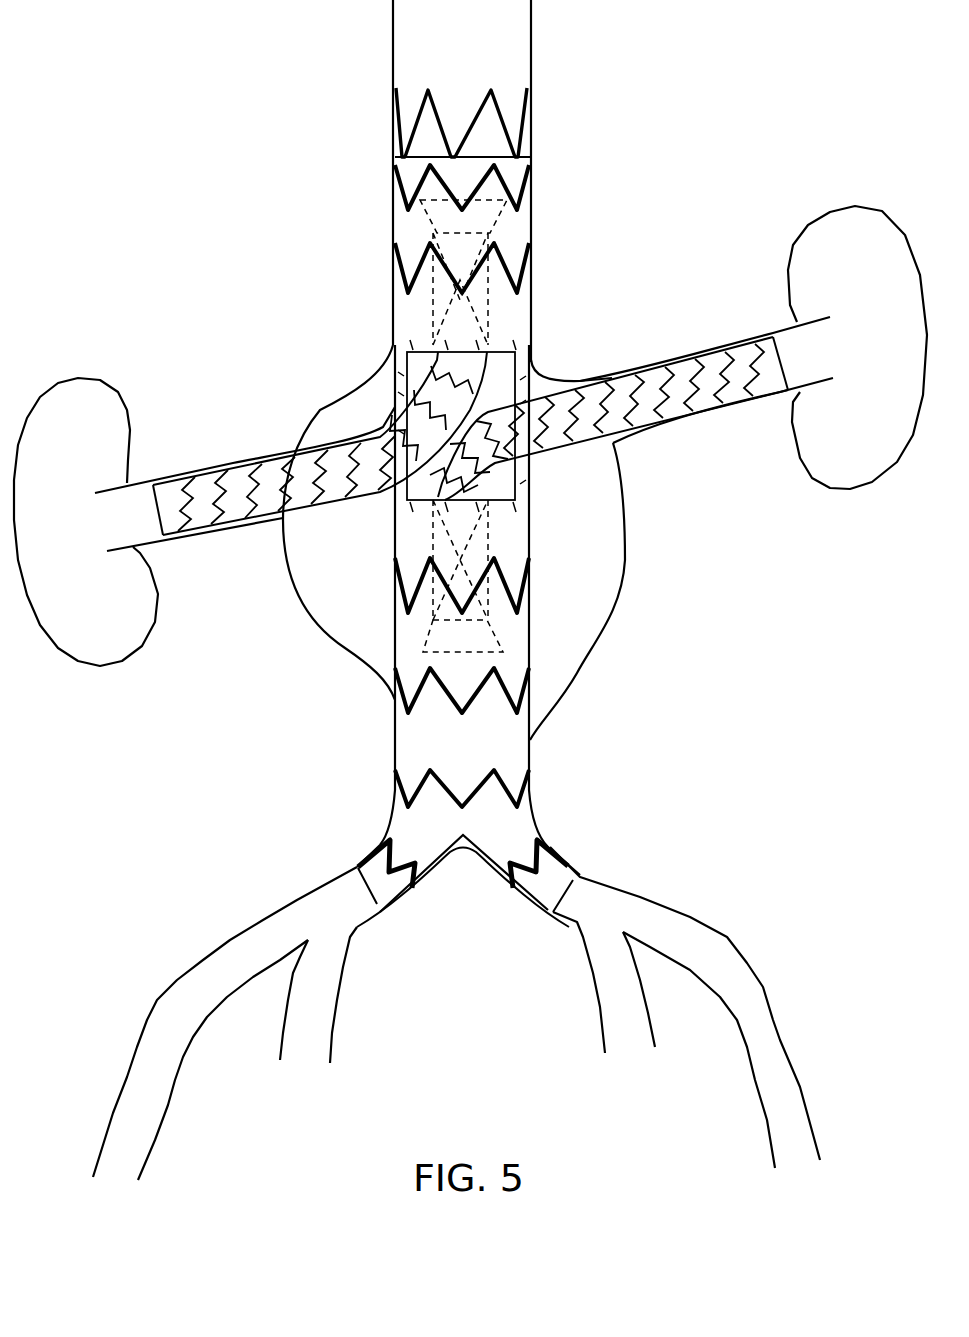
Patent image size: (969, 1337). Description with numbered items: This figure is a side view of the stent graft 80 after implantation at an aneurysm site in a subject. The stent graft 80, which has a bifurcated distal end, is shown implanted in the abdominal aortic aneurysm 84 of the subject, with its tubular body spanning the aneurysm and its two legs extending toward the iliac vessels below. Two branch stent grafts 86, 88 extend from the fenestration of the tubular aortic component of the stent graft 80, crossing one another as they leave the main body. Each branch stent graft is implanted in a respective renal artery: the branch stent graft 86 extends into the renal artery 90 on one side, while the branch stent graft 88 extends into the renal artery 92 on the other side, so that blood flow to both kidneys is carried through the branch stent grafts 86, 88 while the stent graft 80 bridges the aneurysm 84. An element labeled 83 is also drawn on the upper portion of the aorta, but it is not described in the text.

The stent graft 80 is at (393, 516).
The aorta (suprarenal segment) 83 is at (533, 205).
The abdominal aortic aneurysm 84 is at (287, 567).
The branch stent graft 86 is at (553, 392).
The branch stent graft 88 is at (328, 447).
The renal artery 90 is at (786, 327).
The renal artery 92 is at (138, 483).